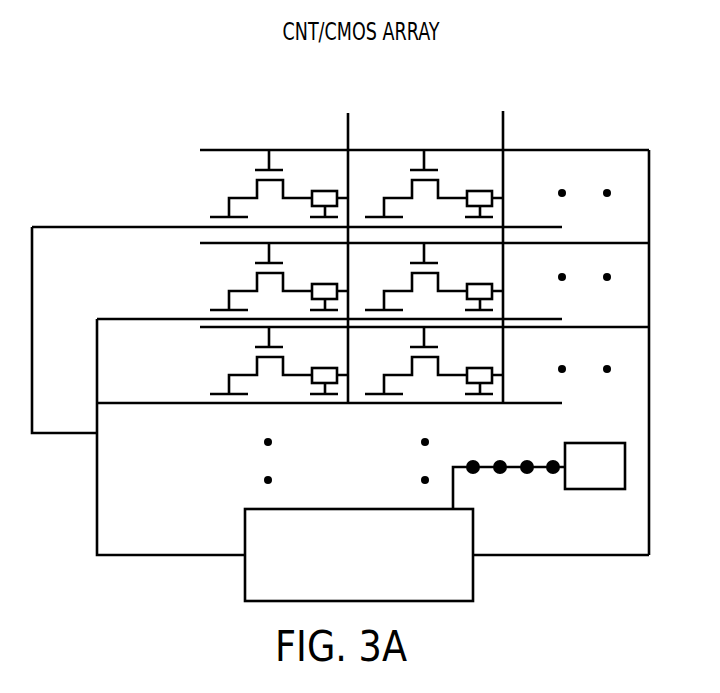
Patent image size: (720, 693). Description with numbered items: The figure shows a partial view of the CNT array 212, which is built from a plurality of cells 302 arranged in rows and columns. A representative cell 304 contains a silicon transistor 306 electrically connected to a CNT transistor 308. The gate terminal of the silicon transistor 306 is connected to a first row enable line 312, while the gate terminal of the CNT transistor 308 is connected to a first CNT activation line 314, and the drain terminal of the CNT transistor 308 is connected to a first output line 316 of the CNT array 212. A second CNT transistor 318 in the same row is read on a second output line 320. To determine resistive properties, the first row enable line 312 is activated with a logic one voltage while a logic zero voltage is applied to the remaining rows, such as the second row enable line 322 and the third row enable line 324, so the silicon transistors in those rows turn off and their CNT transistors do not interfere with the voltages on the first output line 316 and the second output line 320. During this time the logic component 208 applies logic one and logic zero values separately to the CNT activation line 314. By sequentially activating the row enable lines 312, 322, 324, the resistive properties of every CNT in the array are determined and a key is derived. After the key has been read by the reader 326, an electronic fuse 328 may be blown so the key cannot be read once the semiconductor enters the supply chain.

The CNT array 212 is at (545, 85).
The cells 302 is at (382, 172).
The cell 304 is at (216, 170).
The silicon transistor 306 is at (234, 189).
The CNT transistor 308 is at (313, 190).
The first row enable line 312 is at (569, 143).
The first CNT activation line 314 is at (148, 232).
The first output line 316 is at (358, 126).
The second CNT transistor 318 is at (468, 190).
The second output line 320 is at (514, 121).
The second row enable line 322 is at (539, 248).
The third row enable line 324 is at (539, 332).
The reader 326 is at (612, 443).
The electronic fuse 328 is at (510, 472).
The logic component 208 is at (367, 509).